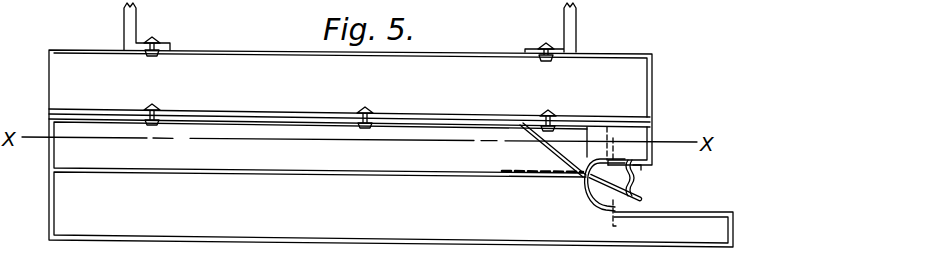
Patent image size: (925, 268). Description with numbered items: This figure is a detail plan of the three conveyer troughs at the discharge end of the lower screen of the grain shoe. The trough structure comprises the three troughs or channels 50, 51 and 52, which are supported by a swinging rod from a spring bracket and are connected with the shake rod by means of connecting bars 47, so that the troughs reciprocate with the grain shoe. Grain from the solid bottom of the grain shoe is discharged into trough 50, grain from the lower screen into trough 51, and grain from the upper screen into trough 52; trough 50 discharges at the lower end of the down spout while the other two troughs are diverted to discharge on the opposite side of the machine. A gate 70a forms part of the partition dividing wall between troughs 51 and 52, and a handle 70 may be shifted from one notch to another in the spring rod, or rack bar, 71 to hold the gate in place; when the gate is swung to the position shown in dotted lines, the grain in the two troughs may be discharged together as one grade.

The connecting bars 47 is at (135, 27).
The trough 50 is at (391, 148).
The trough 51 is at (320, 147).
The trough 52 is at (391, 207).
The handle 70 is at (640, 199).
The gate 70a is at (522, 178).
The spring rod, or rack bar 71 is at (637, 181).